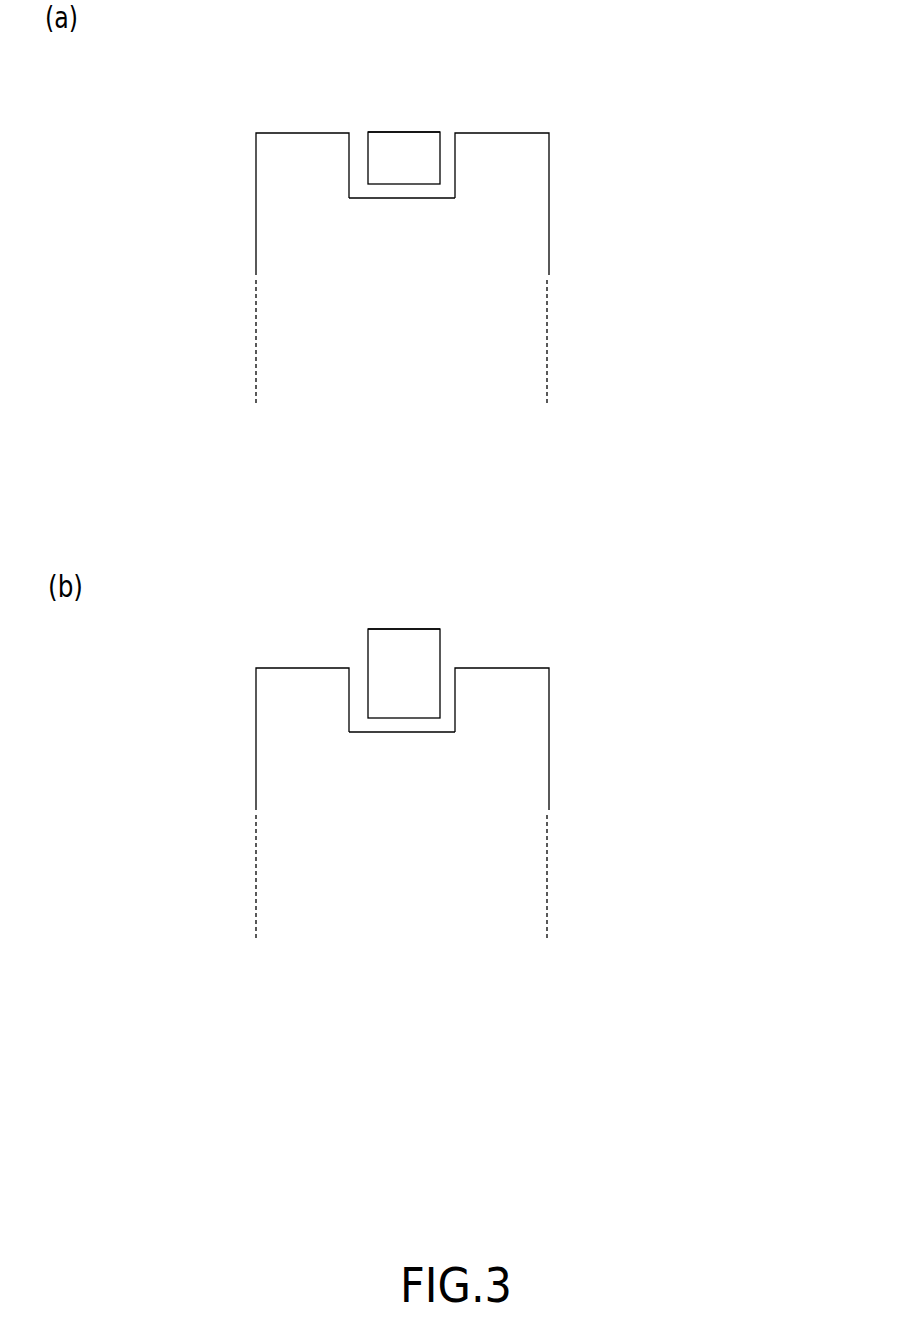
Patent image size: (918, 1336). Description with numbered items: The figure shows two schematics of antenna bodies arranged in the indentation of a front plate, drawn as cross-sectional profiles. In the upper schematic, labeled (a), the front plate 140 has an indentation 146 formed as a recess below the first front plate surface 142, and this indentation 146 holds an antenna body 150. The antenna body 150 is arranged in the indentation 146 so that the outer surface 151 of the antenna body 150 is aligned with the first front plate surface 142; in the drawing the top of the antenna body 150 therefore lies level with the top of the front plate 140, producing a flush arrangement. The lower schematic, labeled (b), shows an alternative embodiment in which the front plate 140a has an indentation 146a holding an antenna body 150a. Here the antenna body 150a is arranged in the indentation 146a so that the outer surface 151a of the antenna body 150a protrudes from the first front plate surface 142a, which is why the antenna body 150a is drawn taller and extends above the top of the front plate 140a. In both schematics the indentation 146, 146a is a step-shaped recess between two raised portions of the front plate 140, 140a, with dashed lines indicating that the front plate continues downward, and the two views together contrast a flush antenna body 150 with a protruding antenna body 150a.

The front plate 140 is at (256, 153).
The first front plate surface 142 is at (517, 133).
The indentation 146 is at (349, 198).
The antenna body 150 is at (440, 155).
The outer surface 151 is at (398, 130).
The front plate 140a is at (256, 704).
The first front plate surface 142a is at (498, 668).
The indentation 146a is at (349, 732).
The antenna body 150a is at (440, 657).
The outer surface 151a is at (388, 628).